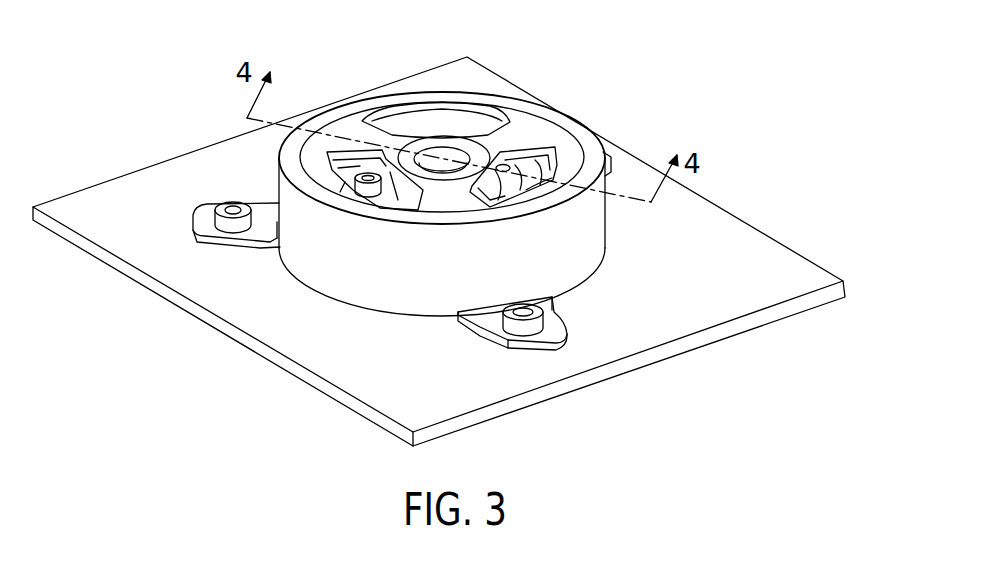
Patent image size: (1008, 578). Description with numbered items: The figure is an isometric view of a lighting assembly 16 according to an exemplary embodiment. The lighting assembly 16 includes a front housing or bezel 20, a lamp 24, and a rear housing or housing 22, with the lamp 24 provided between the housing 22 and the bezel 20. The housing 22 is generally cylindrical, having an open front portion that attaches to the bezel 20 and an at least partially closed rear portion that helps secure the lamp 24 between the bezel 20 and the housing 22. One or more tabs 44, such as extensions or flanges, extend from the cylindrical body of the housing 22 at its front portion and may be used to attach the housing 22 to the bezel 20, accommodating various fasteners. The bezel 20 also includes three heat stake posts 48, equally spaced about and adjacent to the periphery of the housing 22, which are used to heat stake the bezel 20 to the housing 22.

The lighting assembly 16 is at (431, 195).
The bezel 20 is at (730, 230).
The housing 22 is at (393, 97).
The lamp 24 is at (559, 160).
The tabs 44 is at (202, 226).
The heat stake posts 48 is at (224, 201).